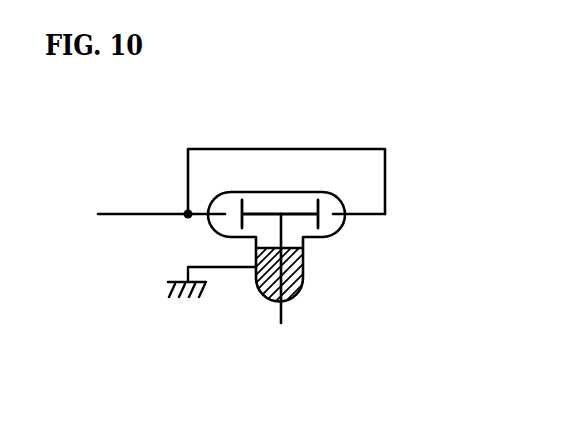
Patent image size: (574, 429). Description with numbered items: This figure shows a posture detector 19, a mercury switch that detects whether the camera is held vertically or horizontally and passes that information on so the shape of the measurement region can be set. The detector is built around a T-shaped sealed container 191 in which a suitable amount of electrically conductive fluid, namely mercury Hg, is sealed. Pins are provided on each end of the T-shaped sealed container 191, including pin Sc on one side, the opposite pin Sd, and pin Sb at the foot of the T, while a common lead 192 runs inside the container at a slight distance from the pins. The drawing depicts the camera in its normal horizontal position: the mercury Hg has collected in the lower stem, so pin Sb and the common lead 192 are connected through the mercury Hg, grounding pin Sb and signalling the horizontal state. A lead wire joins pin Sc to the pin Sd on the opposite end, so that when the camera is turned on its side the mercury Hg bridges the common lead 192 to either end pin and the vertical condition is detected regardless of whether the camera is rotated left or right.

The posture detector 19 is at (264, 248).
The T-shaped sealed container 191 is at (334, 237).
The common lead 192 is at (264, 214).
The mercury Hg is at (303, 278).
The pin Sb is at (301, 270).
The pin Sc is at (161, 233).
The terminal Sd is at (382, 209).